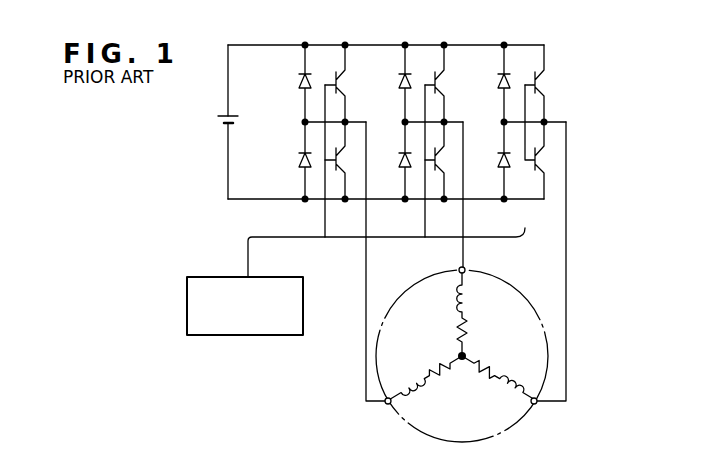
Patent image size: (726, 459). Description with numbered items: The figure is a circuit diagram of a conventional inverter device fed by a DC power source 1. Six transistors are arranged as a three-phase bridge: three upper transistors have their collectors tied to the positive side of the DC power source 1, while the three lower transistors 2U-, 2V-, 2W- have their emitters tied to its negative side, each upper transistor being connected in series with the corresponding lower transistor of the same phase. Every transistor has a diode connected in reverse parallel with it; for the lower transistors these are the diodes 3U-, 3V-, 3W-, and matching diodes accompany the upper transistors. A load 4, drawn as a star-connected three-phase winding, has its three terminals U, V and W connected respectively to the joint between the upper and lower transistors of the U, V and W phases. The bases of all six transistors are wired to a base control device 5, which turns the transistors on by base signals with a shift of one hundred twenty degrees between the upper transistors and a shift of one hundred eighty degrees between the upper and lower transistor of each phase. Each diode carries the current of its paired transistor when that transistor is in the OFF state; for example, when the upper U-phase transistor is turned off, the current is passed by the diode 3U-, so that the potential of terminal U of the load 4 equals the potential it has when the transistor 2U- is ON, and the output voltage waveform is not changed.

The DC power source 1 is at (215, 125).
The transistor 2U- is at (336, 172).
The transistor 2V- is at (438, 163).
The transistor 2W- is at (546, 158).
The diode 3U- is at (298, 171).
The diode 3V- is at (398, 165).
The diode 3W- is at (497, 165).
The load 4 is at (487, 438).
The base control device 5 is at (237, 335).